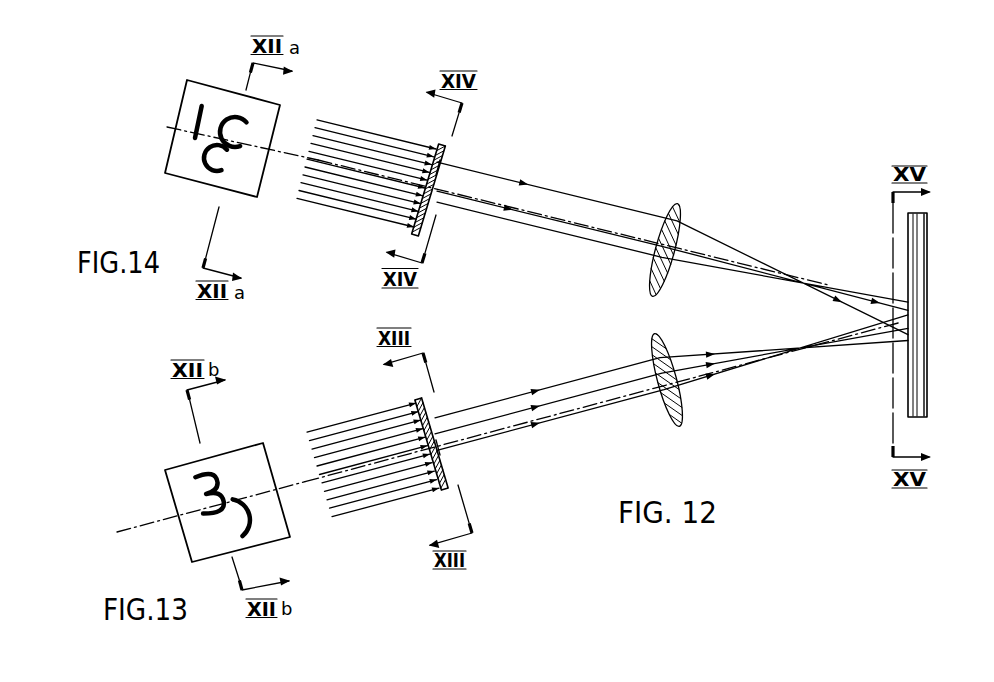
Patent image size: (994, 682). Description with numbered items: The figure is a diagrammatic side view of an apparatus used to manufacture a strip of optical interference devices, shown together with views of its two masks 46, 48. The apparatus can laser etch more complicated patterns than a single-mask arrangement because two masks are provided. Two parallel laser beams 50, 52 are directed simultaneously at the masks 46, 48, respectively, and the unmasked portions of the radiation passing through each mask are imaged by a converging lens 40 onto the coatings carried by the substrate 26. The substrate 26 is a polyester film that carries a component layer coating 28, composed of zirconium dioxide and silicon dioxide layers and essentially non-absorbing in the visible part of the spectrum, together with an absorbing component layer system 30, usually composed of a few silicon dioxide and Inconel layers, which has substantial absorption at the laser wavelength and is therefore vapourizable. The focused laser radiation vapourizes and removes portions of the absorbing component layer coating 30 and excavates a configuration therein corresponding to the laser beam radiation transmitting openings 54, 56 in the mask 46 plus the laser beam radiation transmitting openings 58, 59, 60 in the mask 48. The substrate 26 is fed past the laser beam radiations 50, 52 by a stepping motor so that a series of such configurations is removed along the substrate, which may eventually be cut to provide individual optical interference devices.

In FIG. 12, the polyester film substrate 26 is at (920, 367).
In FIG. 12, the component layer coating 28 is at (914, 298).
In FIG. 12, the absorbing component layer system 30 is at (909, 286).
In FIG. 12, the converging lens 40 is at (684, 216).
In FIG. 13, the mask 46 is at (183, 494).
In FIG. 12, the mask 46 is at (448, 474).
In FIG. 14, the mask 48 is at (170, 160).
In FIG. 12, the mask 48 is at (437, 213).
In FIG. 12, the parallel laser beam 50 is at (397, 500).
In FIG. 12, the parallel laser beam 52 is at (372, 216).
In FIG. 13, the laser beam radiation transmitting opening 54 is at (253, 527).
In FIG. 13, the laser beam radiation transmitting opening 56 is at (200, 480).
In FIG. 12, the laser beam radiation transmitting opening 56 is at (440, 453).
In FIG. 14, the laser beam radiation transmitting opening 58 is at (207, 172).
In FIG. 14, the laser beam radiation transmitting opening 59 is at (197, 112).
In FIG. 14, the laser beam radiation transmitting opening 60 is at (267, 110).
In FIG. 12, the laser beam radiation transmitting opening 60 is at (437, 192).